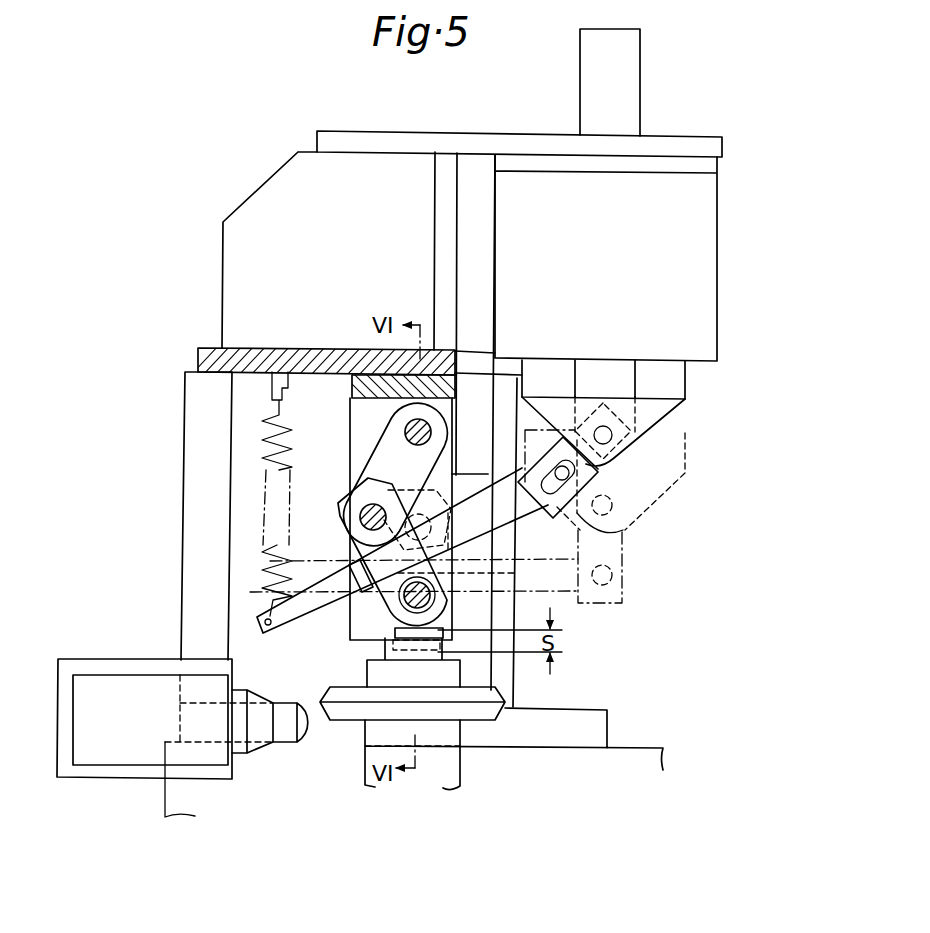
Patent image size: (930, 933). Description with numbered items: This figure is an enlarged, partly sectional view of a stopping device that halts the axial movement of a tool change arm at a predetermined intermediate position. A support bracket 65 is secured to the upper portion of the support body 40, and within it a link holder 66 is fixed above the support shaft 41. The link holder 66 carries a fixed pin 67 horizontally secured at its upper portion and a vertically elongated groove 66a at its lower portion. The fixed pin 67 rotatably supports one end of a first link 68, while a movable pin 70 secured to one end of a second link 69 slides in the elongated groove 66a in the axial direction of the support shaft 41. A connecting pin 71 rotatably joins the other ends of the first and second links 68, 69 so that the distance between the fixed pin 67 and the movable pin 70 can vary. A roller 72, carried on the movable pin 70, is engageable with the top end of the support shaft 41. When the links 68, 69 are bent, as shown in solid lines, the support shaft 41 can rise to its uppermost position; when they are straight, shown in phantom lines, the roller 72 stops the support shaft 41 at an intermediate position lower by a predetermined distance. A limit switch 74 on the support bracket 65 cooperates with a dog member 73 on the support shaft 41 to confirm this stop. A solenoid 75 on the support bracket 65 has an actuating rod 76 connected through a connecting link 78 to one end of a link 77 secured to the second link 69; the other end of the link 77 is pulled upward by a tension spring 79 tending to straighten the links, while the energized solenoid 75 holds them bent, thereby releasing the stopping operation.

The support body 40 is at (640, 748).
The support shaft 41 is at (460, 767).
The support bracket 65 is at (181, 394).
The link holder 66 is at (360, 428).
The vertically elongated groove 66a is at (482, 577).
The fixed pin 67 is at (432, 432).
The first link 68 is at (380, 428).
The second link 69 is at (360, 553).
The movable pin 70 is at (392, 607).
The connecting pin 71 is at (360, 510).
The roller 72 is at (446, 612).
The dog member 73 is at (352, 713).
The limit switch 74 is at (128, 683).
The solenoid 75 is at (705, 272).
The actuating rod 76 is at (630, 97).
The link 77 is at (493, 520).
The connecting link 78 is at (597, 470).
The tension spring 79 is at (265, 442).